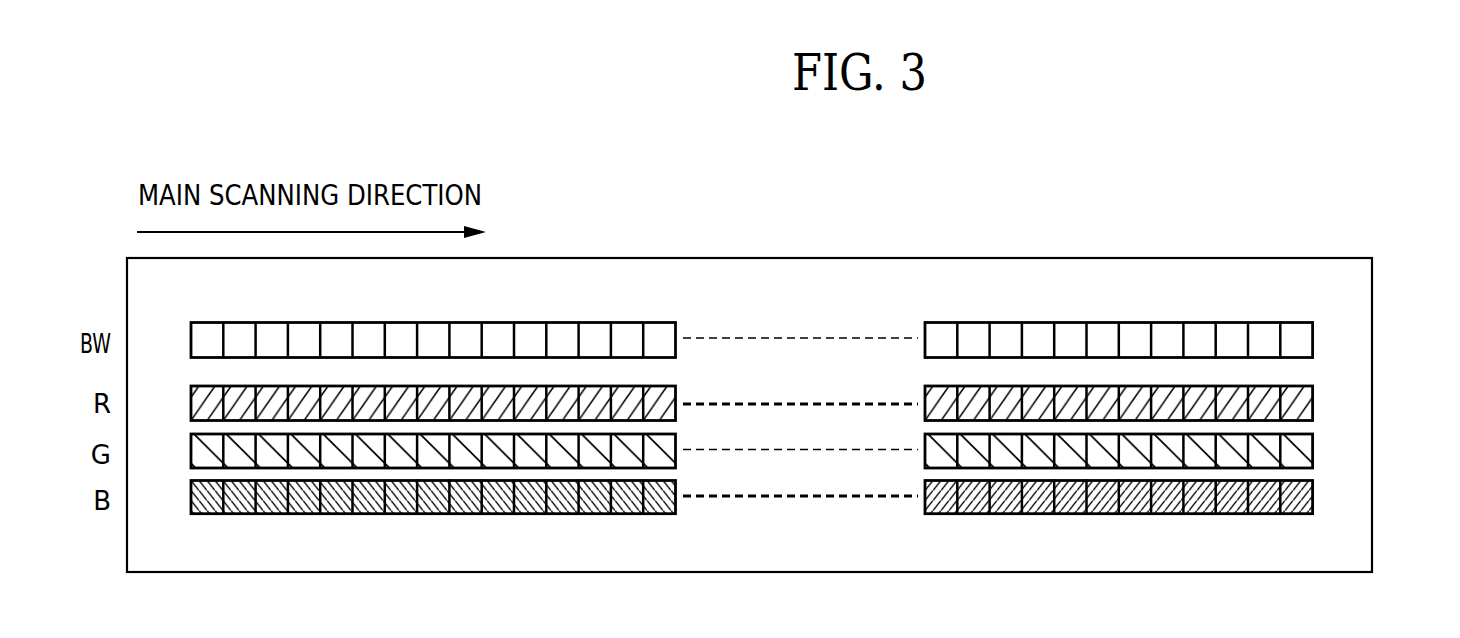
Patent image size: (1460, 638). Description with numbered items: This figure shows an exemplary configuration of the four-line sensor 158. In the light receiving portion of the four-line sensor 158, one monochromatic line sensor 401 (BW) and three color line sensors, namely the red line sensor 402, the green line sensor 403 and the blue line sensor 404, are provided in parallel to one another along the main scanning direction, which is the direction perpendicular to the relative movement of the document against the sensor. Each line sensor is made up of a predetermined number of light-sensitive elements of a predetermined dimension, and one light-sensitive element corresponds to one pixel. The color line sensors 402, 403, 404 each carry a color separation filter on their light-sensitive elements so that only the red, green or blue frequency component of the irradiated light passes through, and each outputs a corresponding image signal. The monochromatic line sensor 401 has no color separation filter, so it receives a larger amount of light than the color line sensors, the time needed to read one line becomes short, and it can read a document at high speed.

The four-line sensor 158 is at (1062, 258).
The monochromatic line sensor 401 is at (1313, 338).
The red color line sensor 402 is at (1313, 405).
The green color line sensor 403 is at (1313, 451).
The blue color line sensor 404 is at (1313, 496).